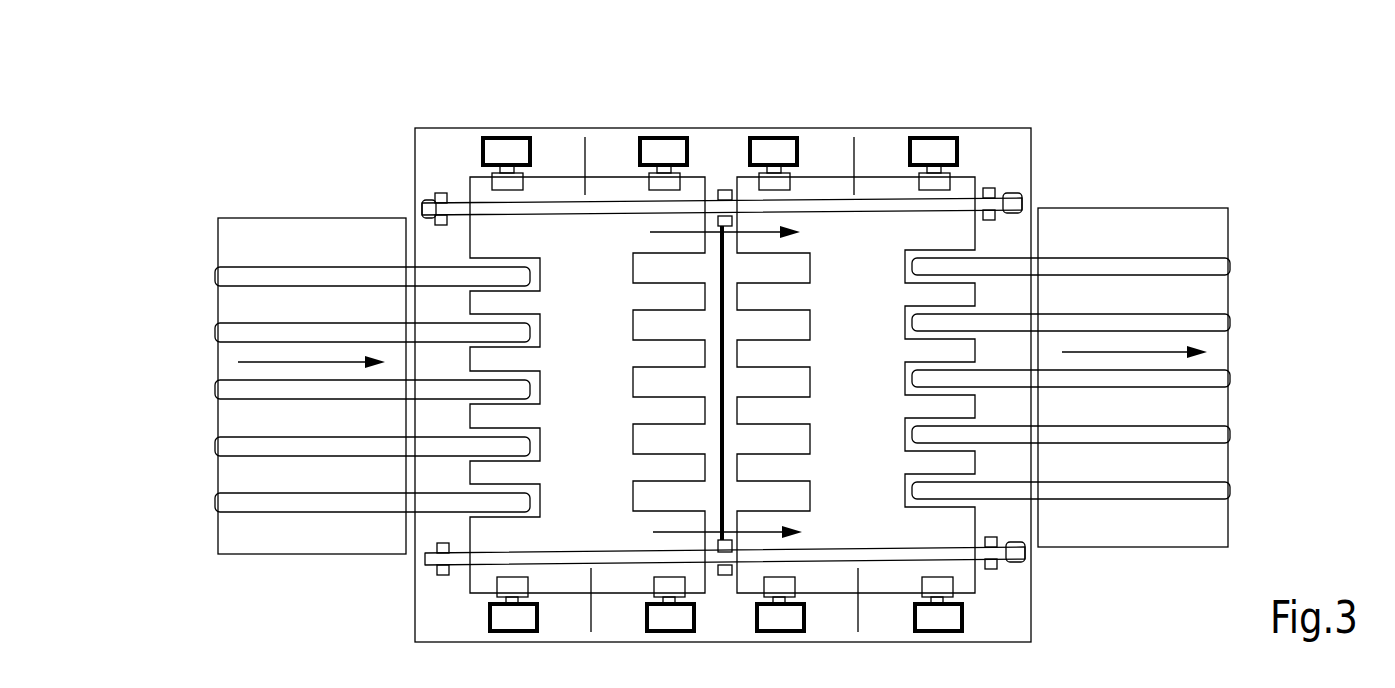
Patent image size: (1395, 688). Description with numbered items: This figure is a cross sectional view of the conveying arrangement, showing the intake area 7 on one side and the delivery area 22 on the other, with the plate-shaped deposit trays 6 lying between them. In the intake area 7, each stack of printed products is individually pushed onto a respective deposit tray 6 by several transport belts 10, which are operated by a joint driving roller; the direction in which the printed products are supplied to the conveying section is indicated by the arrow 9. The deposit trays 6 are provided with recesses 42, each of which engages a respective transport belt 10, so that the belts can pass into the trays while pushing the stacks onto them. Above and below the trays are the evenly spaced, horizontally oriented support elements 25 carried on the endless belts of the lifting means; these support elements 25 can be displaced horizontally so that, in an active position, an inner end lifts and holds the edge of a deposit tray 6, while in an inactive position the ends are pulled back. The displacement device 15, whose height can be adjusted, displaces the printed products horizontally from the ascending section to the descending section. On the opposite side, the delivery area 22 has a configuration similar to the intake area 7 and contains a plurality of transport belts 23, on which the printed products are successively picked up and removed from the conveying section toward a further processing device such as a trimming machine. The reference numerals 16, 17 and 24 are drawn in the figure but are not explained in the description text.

The deposit tray 6 is at (661, 594).
The intake area 7 is at (244, 391).
The arrow 9 is at (231, 333).
The transport belts 10 is at (306, 417).
The displacement device 15 is at (327, 150).
The upper guide rod 16 is at (772, 114).
The fastening nut 17 is at (1111, 140).
The delivery area 22 is at (1177, 330).
The transport belts 23 is at (1144, 378).
The direction of movement 24 is at (1220, 384).
The support elements 25 is at (424, 98).
The recesses 42 is at (313, 233).